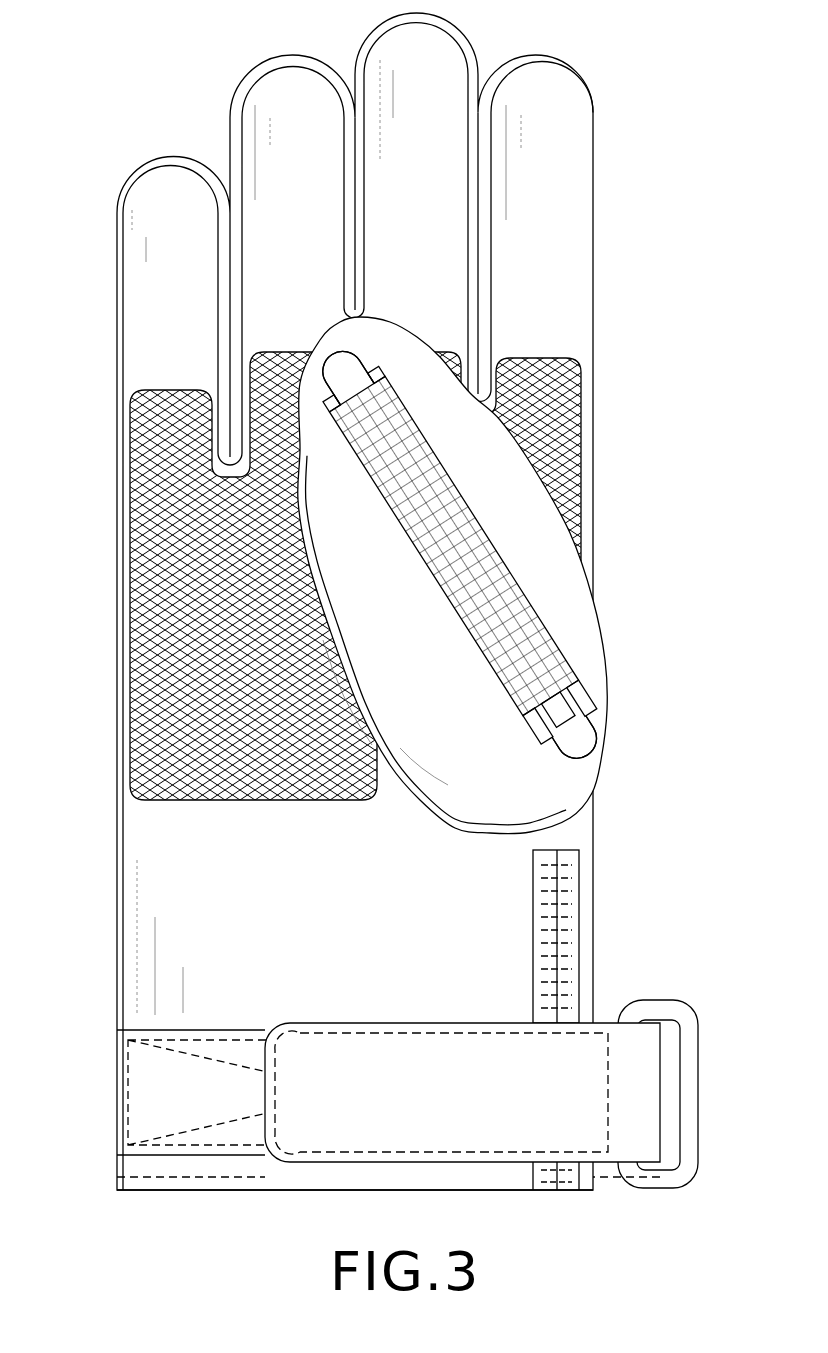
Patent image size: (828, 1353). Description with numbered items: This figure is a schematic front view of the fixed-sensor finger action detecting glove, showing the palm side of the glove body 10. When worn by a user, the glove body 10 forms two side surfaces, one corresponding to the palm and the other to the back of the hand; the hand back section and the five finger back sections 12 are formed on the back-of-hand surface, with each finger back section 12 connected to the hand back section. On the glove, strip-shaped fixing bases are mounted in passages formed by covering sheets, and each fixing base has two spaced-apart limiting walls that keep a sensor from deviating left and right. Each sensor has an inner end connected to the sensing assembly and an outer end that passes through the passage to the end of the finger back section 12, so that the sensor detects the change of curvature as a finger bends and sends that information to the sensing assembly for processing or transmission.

The glove body 10 is at (173, 877).
The finger back section 12 is at (468, 448).